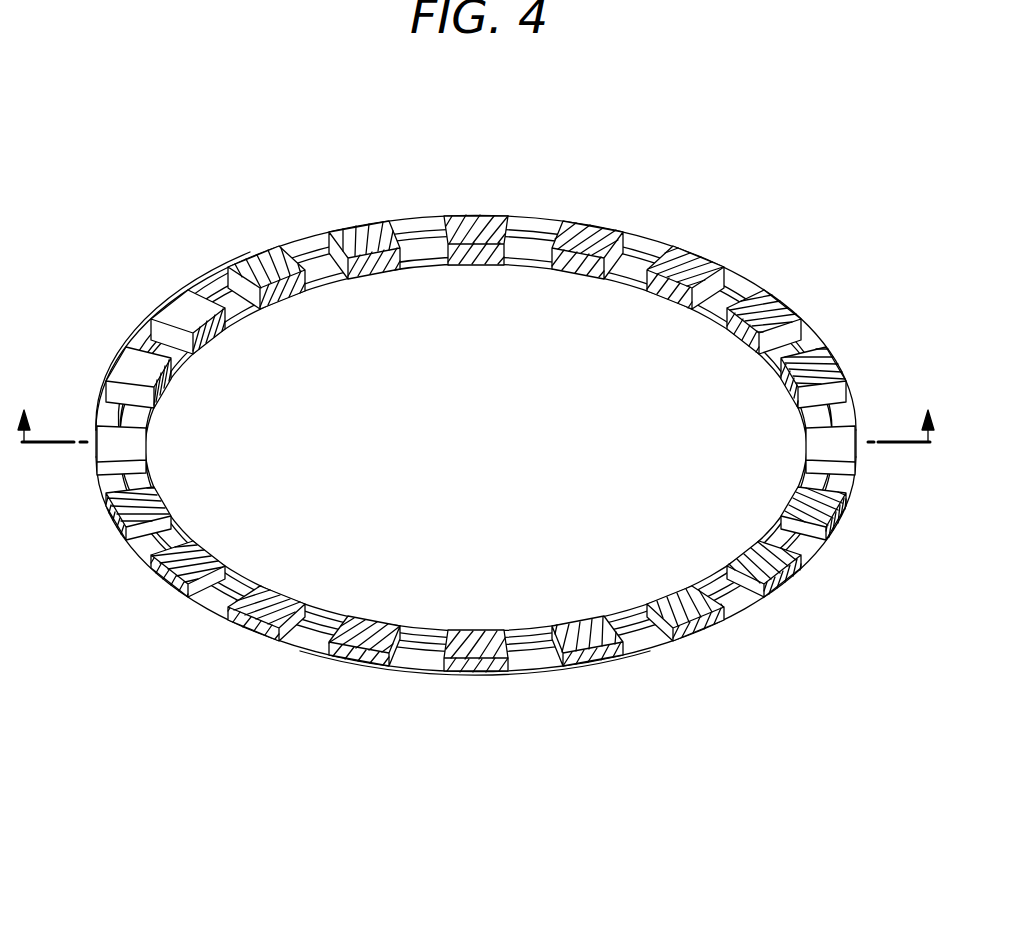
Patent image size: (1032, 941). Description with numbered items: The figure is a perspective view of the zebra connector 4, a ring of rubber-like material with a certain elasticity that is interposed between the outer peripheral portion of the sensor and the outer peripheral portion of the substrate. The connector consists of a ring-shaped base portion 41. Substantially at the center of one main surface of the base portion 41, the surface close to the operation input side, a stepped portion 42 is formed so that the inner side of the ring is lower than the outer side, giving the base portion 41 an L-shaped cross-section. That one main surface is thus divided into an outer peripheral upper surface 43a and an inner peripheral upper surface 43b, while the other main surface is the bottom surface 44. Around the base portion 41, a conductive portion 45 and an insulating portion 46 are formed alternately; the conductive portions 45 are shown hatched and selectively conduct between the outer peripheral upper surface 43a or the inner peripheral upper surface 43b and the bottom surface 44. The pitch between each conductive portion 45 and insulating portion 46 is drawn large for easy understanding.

The zebra connector 4 is at (476, 116).
The base portion 41 is at (407, 217).
The stepped portion 42 is at (287, 252).
The outer peripheral upper surface 43a is at (190, 300).
The inner peripheral upper surface 43b is at (205, 316).
The bottom surface 44 is at (412, 686).
The conductive portion 45 is at (610, 228).
The insulating portion 46 is at (773, 593).